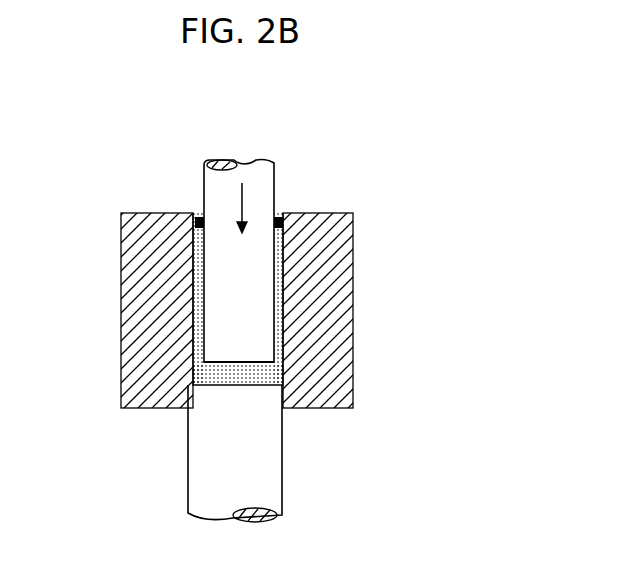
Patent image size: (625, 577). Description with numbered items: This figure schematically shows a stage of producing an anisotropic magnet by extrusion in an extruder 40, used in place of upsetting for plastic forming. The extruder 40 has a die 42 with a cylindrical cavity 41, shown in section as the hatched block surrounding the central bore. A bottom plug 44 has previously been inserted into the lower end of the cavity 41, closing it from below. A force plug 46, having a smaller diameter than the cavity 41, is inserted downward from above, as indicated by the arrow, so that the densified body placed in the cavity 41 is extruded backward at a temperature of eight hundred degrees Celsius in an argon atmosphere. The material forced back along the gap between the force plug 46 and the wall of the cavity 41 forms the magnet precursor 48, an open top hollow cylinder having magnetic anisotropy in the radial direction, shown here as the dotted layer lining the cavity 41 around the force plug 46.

The extruder 40 is at (96, 291).
The cylindrical cavity 41 is at (283, 353).
The die 42 is at (348, 315).
The bottom plug 44 is at (273, 477).
The force plug 46 is at (268, 178).
The magnet precursor 48 is at (210, 377).